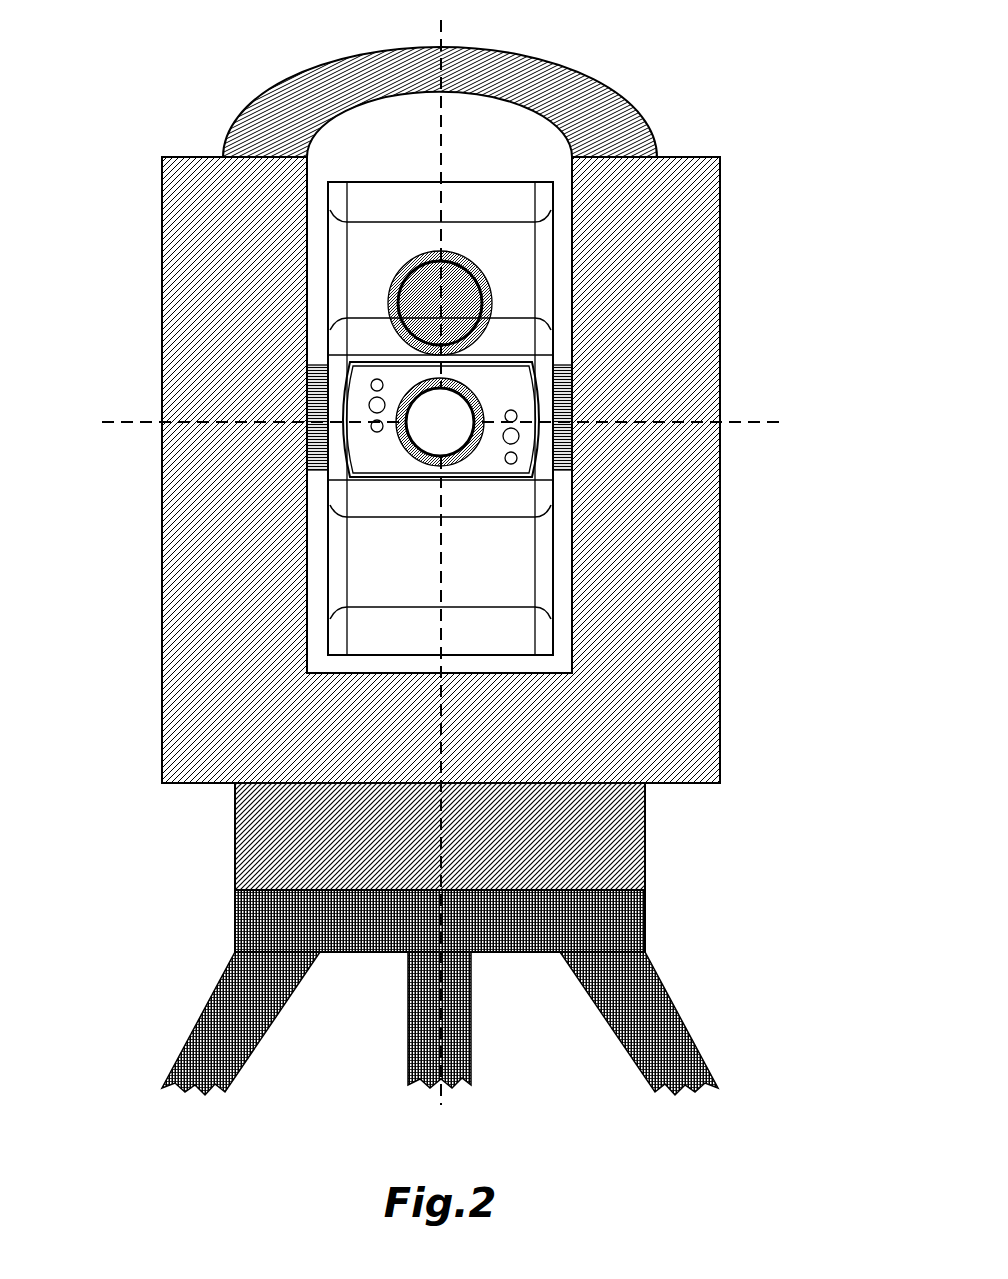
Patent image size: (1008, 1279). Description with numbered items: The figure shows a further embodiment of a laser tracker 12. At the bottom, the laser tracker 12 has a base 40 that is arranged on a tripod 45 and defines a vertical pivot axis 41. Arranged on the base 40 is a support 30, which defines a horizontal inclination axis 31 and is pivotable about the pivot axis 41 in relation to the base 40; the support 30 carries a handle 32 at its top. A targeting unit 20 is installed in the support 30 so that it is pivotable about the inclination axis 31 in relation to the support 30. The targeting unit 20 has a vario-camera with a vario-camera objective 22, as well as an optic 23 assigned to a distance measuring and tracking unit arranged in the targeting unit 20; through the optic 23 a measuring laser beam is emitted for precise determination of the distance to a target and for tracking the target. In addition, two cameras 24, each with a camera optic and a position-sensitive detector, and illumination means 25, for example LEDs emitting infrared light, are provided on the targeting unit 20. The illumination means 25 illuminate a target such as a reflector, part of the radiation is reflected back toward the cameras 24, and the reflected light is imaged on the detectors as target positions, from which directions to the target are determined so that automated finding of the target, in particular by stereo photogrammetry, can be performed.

The laser tracker 12 is at (146, 60).
The targeting unit 20 is at (357, 255).
The vario-camera objective 22 is at (425, 300).
The optic 23 is at (428, 433).
The cameras 24 is at (372, 405).
The illumination means 25 is at (372, 385).
The support 30 is at (700, 246).
The inclination axis 31 is at (735, 420).
The handle 32 is at (620, 118).
The base 40 is at (265, 860).
The pivot axis 41 is at (438, 138).
The tripod 45 is at (250, 932).